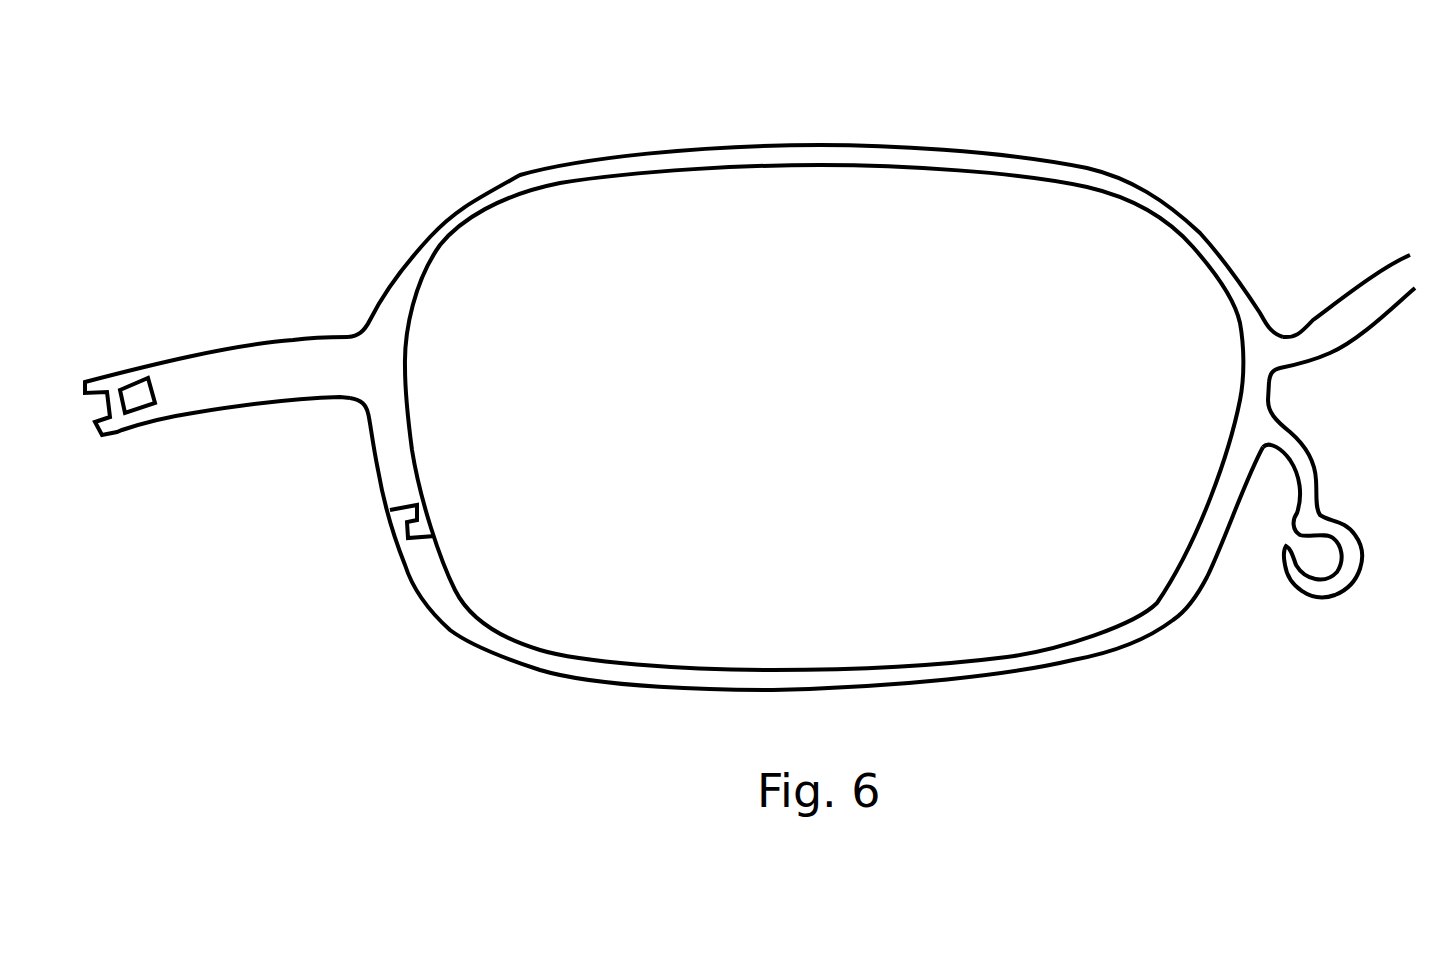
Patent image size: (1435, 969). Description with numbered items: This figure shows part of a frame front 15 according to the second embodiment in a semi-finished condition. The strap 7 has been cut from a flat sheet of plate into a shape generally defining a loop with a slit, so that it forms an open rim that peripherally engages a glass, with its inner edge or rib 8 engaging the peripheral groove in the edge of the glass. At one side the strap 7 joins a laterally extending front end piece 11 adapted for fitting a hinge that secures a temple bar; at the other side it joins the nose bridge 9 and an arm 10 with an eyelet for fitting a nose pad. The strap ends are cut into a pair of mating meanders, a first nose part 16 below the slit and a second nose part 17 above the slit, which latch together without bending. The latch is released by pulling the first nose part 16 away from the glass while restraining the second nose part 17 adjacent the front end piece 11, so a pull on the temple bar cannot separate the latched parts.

The strap 7 is at (485, 197).
The inner edge or rib 8 is at (532, 194).
The nose bridge 9 is at (1362, 282).
The arm 10 is at (1318, 472).
The front end piece 11 is at (245, 337).
The frame front 15 is at (735, 123).
The first nose part 16 is at (393, 542).
The second nose part 17 is at (450, 507).